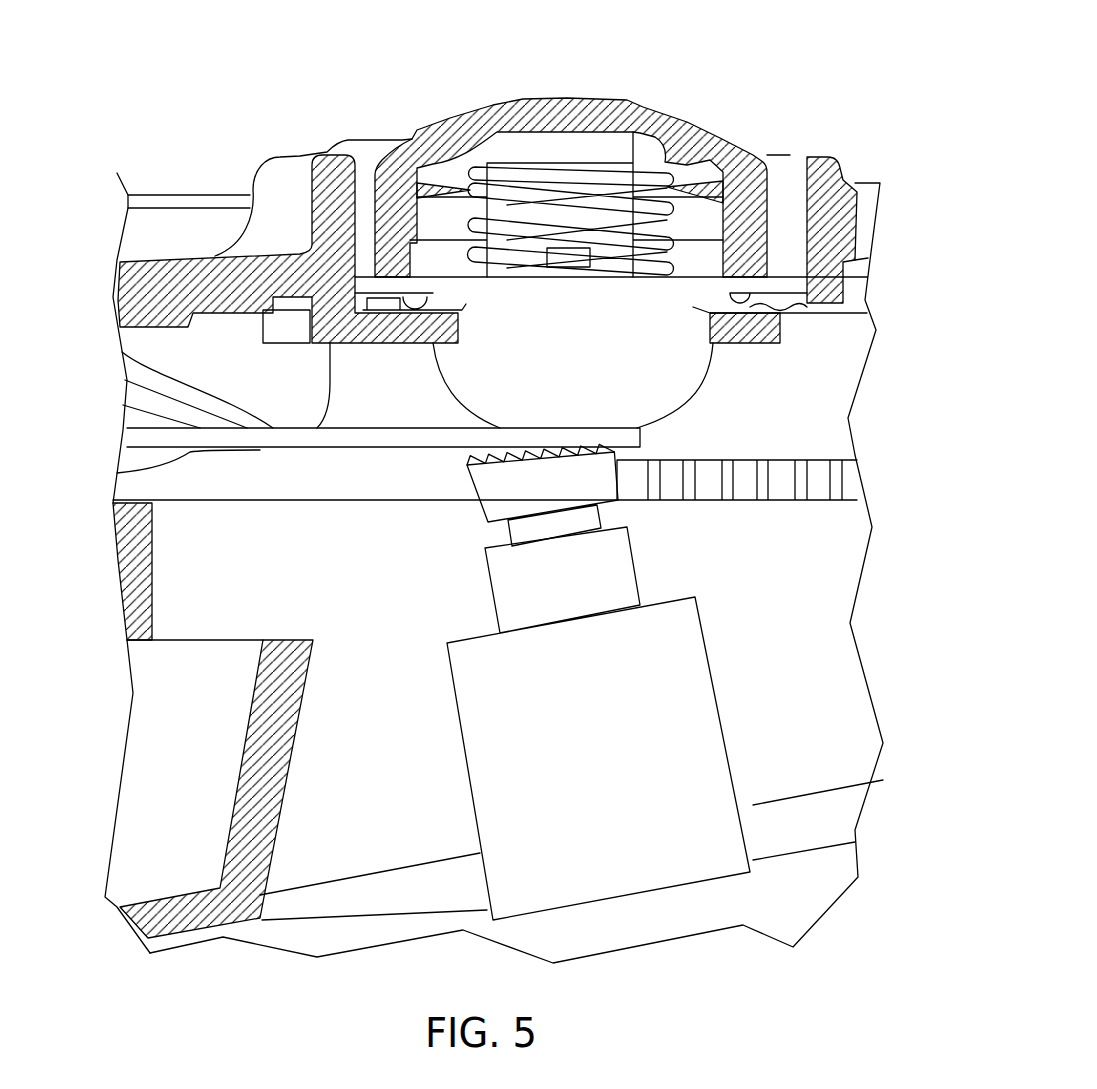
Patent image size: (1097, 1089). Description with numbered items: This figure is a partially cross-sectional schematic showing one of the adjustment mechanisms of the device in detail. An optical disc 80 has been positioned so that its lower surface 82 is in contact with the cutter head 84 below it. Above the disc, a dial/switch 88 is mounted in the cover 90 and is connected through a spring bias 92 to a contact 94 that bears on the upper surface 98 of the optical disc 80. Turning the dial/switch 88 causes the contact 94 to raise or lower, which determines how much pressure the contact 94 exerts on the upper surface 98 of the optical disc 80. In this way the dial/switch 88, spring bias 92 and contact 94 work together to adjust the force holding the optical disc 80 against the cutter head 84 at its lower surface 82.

The optical disc 80 is at (337, 440).
The lower surface 82 is at (117, 473).
The cutter head 84 is at (607, 495).
The dial/switch 88 is at (650, 110).
The cover 90 is at (165, 240).
The spring bias 92 is at (673, 203).
The contact 94 is at (680, 372).
The upper surface 98 is at (122, 352).